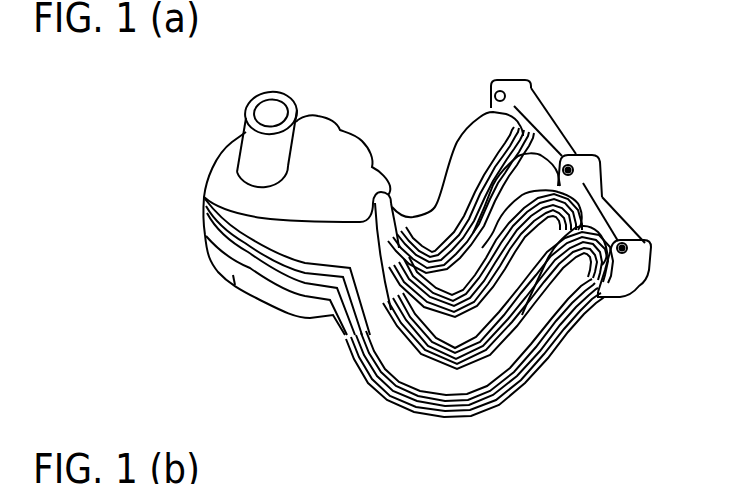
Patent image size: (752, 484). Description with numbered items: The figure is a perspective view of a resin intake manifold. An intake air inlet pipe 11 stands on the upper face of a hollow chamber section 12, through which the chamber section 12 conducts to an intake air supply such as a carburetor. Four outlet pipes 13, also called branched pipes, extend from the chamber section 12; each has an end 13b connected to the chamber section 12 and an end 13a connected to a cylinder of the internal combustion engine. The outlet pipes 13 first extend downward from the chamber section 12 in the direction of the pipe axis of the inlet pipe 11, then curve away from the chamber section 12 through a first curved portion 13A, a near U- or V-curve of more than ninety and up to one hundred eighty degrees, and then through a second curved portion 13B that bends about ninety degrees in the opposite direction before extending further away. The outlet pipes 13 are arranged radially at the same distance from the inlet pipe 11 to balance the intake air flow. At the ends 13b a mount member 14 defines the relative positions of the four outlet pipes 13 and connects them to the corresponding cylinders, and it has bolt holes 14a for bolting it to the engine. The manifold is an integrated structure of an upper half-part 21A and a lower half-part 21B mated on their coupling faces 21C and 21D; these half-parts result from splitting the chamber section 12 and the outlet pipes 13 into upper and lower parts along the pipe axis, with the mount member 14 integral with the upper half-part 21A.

The intake air inlet pipe 11 is at (253, 97).
The hollow chamber section 12 is at (316, 135).
The outlet pipes 13 is at (412, 214).
The end of outlet pipe connected to cylinder 13a is at (499, 122).
The end of outlet pipe connected to chamber section 13b is at (359, 243).
The first curved portion 13A is at (508, 415).
The second curved portion 13B is at (584, 322).
The mount member 14 is at (519, 80).
The bolt holes 14a is at (568, 164).
The upper half-part 21A is at (220, 190).
The lower half-part 21B is at (223, 280).
The coupling face 21C is at (202, 226).
The coupling face 21D is at (226, 269).